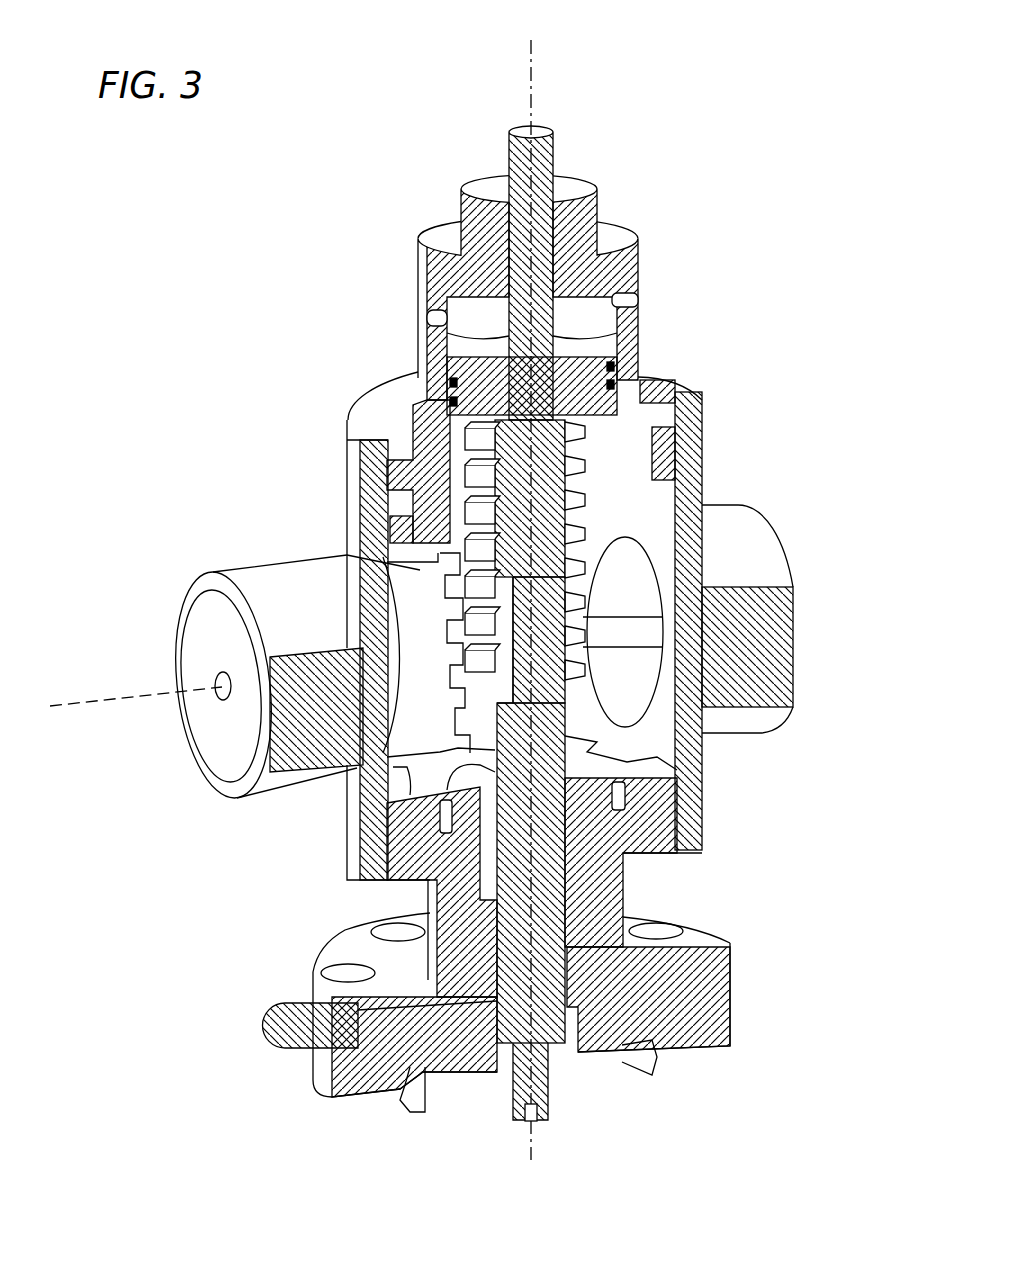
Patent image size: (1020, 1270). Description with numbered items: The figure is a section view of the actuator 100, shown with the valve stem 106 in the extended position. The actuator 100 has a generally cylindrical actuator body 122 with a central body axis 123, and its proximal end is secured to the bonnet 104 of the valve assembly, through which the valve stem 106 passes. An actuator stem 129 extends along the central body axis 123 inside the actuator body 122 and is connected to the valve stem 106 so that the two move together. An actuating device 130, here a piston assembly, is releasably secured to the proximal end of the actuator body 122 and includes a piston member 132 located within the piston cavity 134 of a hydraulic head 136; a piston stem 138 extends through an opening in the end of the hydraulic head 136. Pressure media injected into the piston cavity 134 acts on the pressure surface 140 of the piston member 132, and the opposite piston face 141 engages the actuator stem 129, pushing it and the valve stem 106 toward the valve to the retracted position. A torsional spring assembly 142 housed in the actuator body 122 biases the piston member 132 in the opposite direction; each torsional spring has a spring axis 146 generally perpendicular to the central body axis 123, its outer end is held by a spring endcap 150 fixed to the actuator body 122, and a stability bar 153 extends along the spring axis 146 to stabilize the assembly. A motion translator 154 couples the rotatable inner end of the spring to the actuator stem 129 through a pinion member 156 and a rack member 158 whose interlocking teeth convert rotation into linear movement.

The actuator 100 is at (462, 599).
The bonnet 104 is at (705, 998).
The valve stem 106 is at (562, 912).
The actuator body 122 is at (395, 520).
The central body axis 123 is at (538, 80).
The actuator stem 129 is at (513, 492).
The actuating device 130 is at (586, 359).
The piston member 132 is at (587, 386).
The piston cavity 134 is at (600, 320).
The hydraulic head 136 is at (415, 435).
The piston stem 138 is at (556, 150).
The pressure surface 140 is at (467, 348).
The piston face 141 is at (699, 391).
The torsional spring assembly 142 is at (327, 824).
The spring axis 146 is at (100, 700).
The spring endcap 150 is at (222, 740).
The stability bar 153 is at (622, 630).
The motion translator 154 is at (347, 555).
The pinion member 156 is at (417, 612).
The rack member 158 is at (585, 530).